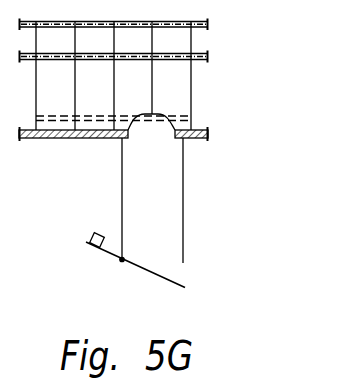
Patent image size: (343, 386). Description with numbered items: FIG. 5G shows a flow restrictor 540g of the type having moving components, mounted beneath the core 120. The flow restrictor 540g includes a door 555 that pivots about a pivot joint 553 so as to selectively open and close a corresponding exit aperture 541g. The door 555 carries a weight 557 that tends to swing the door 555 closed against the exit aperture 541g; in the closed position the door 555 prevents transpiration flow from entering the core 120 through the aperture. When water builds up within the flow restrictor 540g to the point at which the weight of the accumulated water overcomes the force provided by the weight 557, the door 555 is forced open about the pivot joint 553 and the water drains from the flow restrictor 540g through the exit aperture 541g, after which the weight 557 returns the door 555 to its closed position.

The core 120 is at (214, 70).
The flow restrictor 540g is at (216, 174).
The exit aperture 541g is at (186, 275).
The pivot joint 553 is at (120, 261).
The door 555 is at (147, 272).
The weight 557 is at (88, 240).